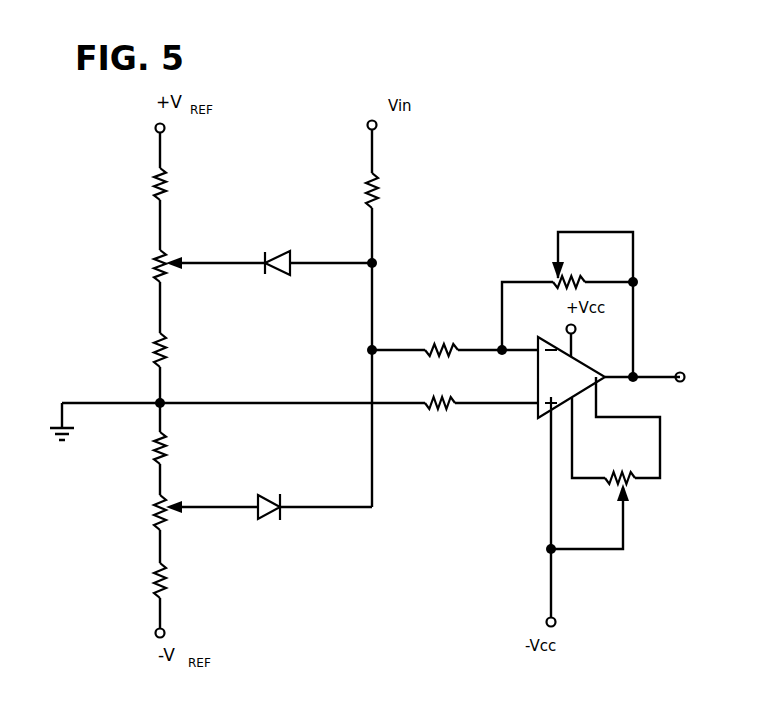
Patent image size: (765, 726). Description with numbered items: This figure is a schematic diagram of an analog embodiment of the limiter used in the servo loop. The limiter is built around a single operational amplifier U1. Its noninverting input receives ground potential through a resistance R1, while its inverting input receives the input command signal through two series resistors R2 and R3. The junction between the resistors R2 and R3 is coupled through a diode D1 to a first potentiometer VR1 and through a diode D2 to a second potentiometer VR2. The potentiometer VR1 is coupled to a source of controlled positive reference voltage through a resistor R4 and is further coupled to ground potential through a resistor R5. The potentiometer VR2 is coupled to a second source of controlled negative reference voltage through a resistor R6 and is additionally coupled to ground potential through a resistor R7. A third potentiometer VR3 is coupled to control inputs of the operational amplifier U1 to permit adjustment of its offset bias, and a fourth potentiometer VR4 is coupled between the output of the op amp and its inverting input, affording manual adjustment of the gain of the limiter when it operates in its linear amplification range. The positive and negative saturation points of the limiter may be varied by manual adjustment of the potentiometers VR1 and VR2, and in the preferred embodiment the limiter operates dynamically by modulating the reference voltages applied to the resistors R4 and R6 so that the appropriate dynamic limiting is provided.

The resistance R1 is at (434, 410).
The resistor R2 is at (376, 181).
The resistor R3 is at (428, 347).
The resistor R4 is at (164, 175).
The resistor R5 is at (160, 331).
The resistor R6 is at (166, 578).
The resistor R7 is at (164, 448).
The first potentiometer VR1 is at (158, 257).
The second potentiometer VR2 is at (158, 497).
The third potentiometer VR3 is at (633, 484).
The fourth potentiometer VR4 is at (552, 280).
The diode D1 is at (272, 276).
The diode D2 is at (273, 514).
The operational amplifier U1 is at (540, 407).